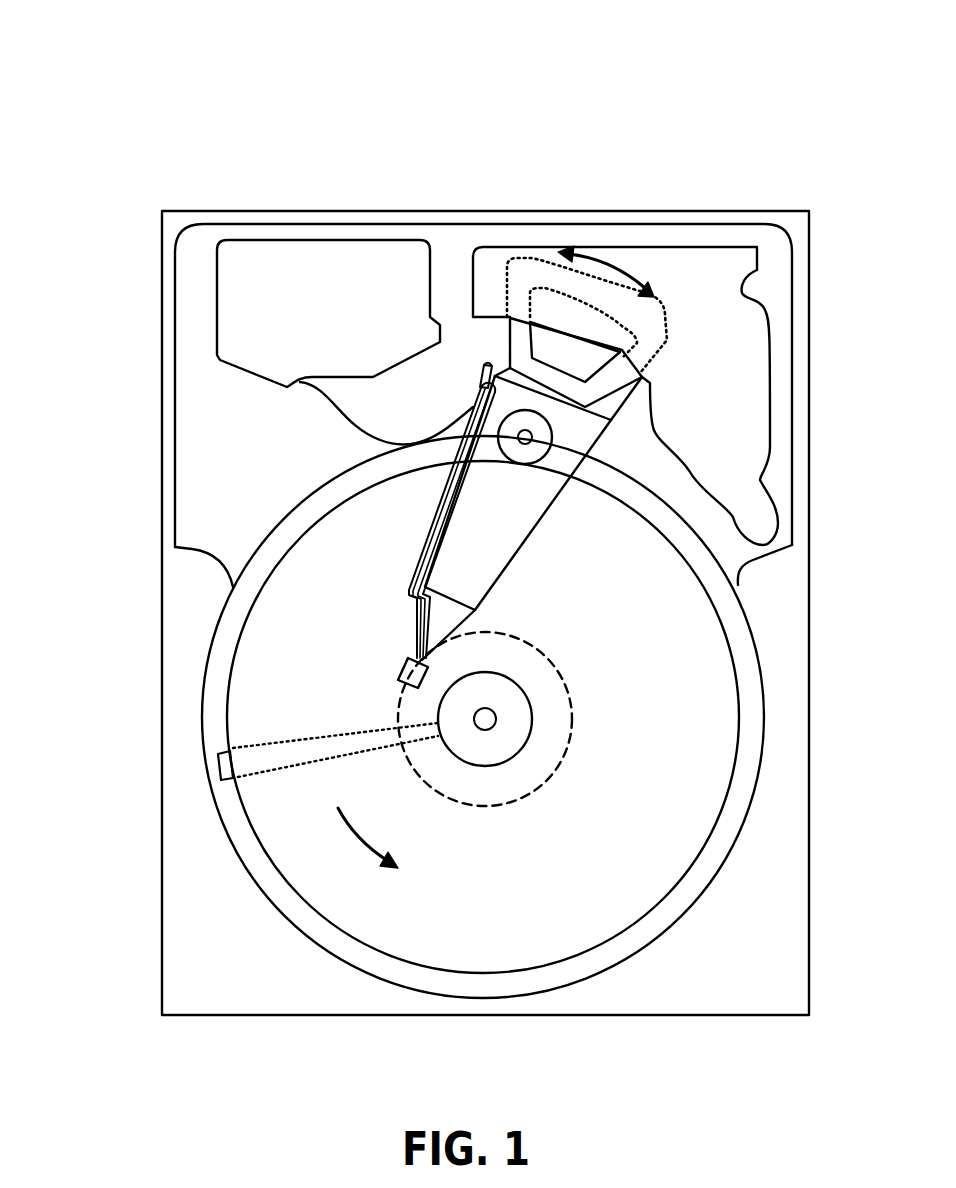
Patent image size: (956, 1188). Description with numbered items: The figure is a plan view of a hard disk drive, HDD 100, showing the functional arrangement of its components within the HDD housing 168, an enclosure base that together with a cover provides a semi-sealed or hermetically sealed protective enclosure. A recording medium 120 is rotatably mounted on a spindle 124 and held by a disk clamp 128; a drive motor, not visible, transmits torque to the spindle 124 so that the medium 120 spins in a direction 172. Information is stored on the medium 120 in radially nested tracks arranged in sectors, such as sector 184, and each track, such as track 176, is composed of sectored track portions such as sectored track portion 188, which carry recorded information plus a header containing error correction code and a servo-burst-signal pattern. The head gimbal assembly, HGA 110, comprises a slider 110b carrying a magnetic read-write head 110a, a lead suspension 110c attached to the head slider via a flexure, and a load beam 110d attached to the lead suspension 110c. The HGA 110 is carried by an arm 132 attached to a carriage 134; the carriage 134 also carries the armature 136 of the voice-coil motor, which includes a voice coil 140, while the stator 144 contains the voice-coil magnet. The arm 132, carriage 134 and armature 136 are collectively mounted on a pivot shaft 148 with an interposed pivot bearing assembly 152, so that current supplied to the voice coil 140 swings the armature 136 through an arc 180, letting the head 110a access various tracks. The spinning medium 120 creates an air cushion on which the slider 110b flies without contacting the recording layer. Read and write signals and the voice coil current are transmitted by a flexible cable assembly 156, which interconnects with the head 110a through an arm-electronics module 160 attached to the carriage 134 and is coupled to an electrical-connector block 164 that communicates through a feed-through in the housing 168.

The hard disk drive 100 is at (93, 95).
The HDD housing 168 is at (795, 216).
The electrical-connector block 164 is at (242, 310).
The flexible cable assembly 156 is at (342, 410).
The stator 144 is at (737, 338).
The arc 180 is at (608, 262).
The armature 136 is at (503, 355).
The voice coil 140 is at (520, 327).
The carriage 134 is at (545, 468).
The arm 132 is at (477, 552).
The pivot bearing assembly 152 is at (537, 450).
The pivot shaft 148 is at (533, 435).
The arm-electronics module 160 is at (480, 400).
The head gimbal assembly 110 is at (92, 520).
The magnetic read-write head 110a is at (421, 655).
The slider 110b is at (418, 632).
The lead suspension 110c is at (413, 603).
The load beam 110d is at (409, 590).
The sectored track portion 188 is at (400, 680).
The recording medium 120 is at (672, 668).
The track 176 is at (565, 678).
The disk clamp 128 is at (510, 737).
The spindle 124 is at (495, 718).
The sector 184 is at (213, 767).
The direction 172 is at (372, 845).